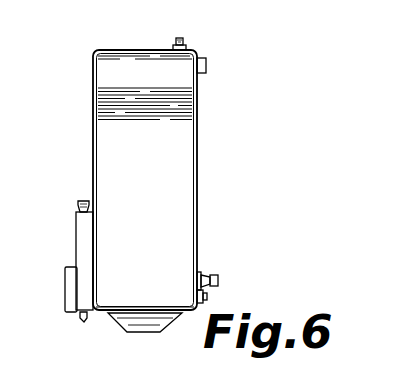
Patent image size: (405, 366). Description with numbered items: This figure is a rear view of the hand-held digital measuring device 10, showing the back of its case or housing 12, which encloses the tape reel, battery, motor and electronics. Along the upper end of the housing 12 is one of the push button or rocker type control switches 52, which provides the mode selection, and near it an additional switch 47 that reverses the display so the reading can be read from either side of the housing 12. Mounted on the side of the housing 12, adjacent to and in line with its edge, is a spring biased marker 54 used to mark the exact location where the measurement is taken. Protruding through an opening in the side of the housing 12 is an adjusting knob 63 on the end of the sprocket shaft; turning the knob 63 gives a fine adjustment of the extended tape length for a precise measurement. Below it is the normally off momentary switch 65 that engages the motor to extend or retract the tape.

The hand-held digital measuring device 10 is at (154, 175).
The housing 12 is at (196, 172).
The additional switch 47 is at (206, 63).
The control switch 52 is at (177, 40).
The spring biased marker 54 is at (84, 250).
The adjusting knob 63 is at (215, 275).
The momentary switch 65 is at (207, 297).